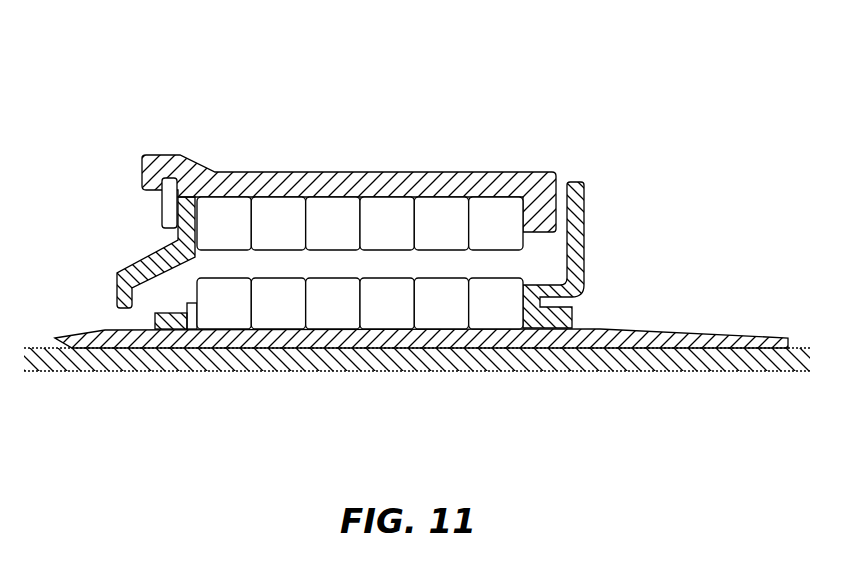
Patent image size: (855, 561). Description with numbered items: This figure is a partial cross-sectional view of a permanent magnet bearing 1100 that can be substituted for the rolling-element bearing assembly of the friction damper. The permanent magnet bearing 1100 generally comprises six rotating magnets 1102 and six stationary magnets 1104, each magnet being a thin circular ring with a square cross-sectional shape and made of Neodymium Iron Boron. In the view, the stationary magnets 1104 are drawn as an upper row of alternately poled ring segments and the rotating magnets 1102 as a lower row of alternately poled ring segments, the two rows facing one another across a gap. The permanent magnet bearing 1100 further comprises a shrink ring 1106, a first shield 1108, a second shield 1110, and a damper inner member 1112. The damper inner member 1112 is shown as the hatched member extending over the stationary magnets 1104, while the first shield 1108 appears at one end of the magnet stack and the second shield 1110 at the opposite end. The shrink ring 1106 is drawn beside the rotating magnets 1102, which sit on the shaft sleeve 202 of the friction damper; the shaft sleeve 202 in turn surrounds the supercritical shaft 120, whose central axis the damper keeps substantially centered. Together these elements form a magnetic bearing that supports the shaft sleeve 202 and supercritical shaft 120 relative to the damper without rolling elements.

The permanent magnet bearing 1100 is at (410, 110).
The rotating magnets 1102 is at (340, 324).
The stationary magnets 1104 is at (276, 195).
The shrink ring 1106 is at (180, 328).
The first shield 1108 is at (138, 250).
The second shield 1110 is at (589, 219).
The damper inner member 1112 is at (178, 158).
The shaft sleeve 202 is at (595, 328).
The supercritical shaft 120 is at (633, 357).